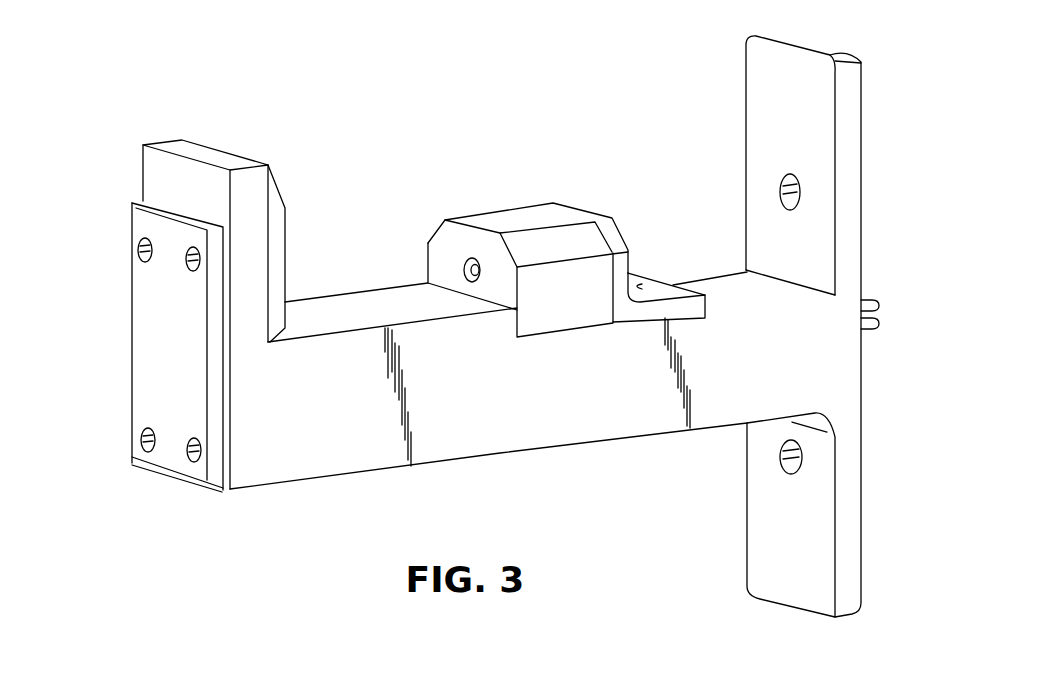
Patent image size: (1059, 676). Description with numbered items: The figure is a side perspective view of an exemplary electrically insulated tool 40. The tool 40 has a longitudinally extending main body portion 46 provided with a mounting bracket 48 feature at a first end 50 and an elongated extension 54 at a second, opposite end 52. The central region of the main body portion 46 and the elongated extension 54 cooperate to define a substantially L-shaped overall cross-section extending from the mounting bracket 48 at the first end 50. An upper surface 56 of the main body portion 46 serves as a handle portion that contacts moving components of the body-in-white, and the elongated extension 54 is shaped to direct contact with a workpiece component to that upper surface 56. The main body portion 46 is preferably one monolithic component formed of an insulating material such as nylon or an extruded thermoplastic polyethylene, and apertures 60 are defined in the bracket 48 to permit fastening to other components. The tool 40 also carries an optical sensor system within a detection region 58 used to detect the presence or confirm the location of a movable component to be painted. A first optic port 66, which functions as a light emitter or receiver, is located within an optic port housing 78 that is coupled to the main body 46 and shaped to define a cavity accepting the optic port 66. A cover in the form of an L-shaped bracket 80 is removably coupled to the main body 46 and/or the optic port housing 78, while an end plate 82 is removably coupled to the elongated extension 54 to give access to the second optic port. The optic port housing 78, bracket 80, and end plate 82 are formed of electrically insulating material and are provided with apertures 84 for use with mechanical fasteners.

The electrically insulated tool 40 is at (880, 97).
The main body portion 46 is at (570, 432).
The mounting bracket 48 is at (765, 128).
The first end 50 is at (735, 491).
The second end 52 is at (187, 502).
The elongated extension 54 is at (145, 185).
The upper surface 56 is at (363, 307).
The detection region 58 is at (332, 267).
The apertures 60 is at (800, 193).
The first optic port 66 is at (464, 276).
The optic port housing 78 is at (518, 218).
The L-shaped bracket 80 is at (654, 293).
The end plate 82 is at (143, 365).
The apertures 84 is at (189, 260).